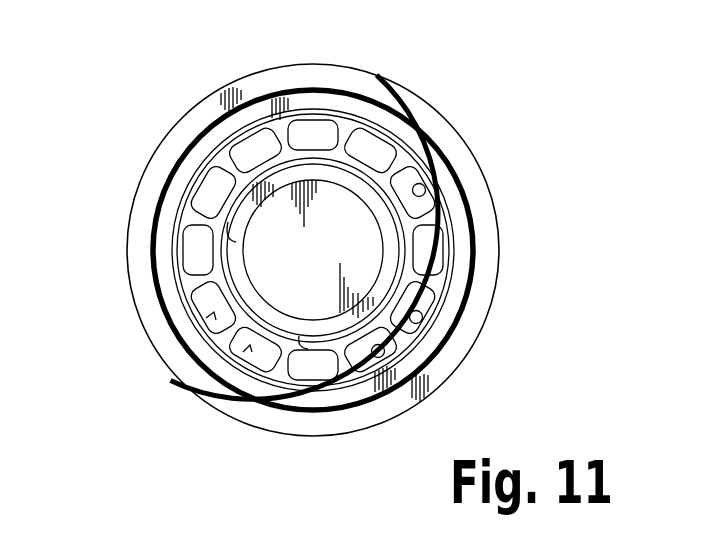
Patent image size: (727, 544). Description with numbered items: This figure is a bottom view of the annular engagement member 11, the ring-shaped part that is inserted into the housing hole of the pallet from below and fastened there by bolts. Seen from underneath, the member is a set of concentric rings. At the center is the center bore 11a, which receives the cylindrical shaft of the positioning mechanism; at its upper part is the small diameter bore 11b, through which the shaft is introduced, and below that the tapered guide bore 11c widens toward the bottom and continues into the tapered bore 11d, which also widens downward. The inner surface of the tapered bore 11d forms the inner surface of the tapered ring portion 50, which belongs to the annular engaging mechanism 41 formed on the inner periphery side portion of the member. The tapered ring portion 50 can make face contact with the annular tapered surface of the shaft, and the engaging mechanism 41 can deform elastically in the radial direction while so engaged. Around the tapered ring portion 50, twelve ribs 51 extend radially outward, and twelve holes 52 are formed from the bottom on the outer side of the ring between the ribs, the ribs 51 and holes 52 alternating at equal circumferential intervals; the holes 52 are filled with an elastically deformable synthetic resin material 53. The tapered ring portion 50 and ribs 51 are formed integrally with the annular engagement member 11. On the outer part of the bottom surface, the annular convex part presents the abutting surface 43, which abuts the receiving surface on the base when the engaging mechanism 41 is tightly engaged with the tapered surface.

The annular engagement member 11 is at (482, 72).
The center bore 11a is at (315, 182).
The small diameter bore 11b is at (286, 187).
The tapered guide bore 11c is at (253, 193).
The tapered bore 11d is at (228, 218).
The annular engaging mechanism 41 is at (360, 388).
The abutting surface 43 is at (460, 290).
The tapered ring portion 50 is at (316, 348).
The ribs 51 is at (397, 163).
The holes 52 is at (426, 190).
The synthetic resin material 53 is at (248, 348).